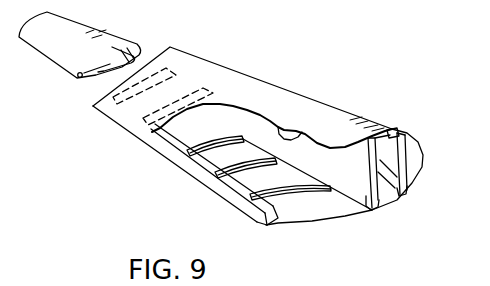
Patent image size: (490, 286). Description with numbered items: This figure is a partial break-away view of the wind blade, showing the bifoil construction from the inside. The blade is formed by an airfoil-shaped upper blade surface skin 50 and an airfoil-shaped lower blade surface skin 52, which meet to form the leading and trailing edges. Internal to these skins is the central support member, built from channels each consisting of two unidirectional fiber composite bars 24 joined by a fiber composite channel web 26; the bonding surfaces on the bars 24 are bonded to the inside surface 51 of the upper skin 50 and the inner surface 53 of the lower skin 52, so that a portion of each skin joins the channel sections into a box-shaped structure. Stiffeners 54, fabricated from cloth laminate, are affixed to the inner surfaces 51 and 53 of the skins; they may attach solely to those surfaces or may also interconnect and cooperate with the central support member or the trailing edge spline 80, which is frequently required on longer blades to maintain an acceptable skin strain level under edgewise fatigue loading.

The unidirectional fiber composite bars 24 is at (385, 134).
The fiber composite channel web 26 is at (407, 165).
The upper blade surface skin 50 is at (322, 108).
The inside surface of the upper skin 51 is at (277, 123).
The lower blade surface skin 52 is at (324, 223).
The inner surface of the lower skin 53 is at (328, 205).
The stiffeners 54 is at (255, 195).
The trailing edge spline 80 is at (162, 150).